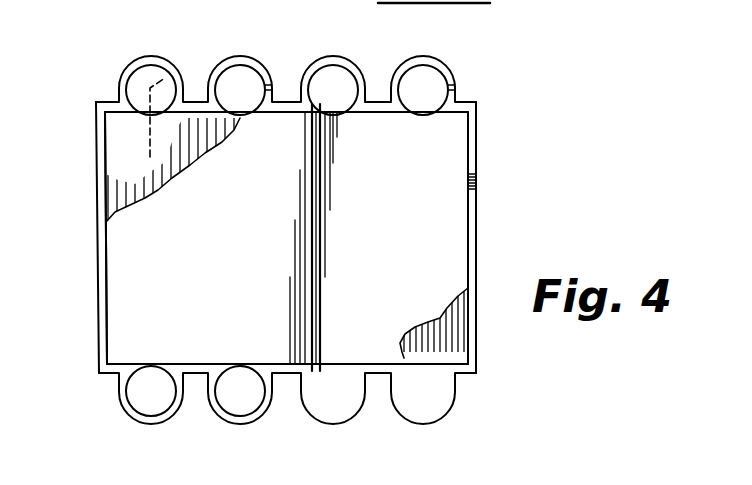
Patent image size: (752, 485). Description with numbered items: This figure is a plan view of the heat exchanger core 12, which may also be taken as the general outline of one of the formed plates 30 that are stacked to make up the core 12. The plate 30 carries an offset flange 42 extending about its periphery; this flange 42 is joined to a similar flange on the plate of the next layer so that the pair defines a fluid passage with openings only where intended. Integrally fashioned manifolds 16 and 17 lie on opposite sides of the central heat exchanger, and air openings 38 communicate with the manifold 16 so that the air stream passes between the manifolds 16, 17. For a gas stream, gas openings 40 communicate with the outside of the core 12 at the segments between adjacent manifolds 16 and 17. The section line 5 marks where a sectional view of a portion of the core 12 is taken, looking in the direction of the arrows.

The core 12 is at (650, 108).
The formed plate 30 is at (511, 188).
The offset flange 42 is at (96, 282).
The air openings 38 is at (147, 107).
The manifold 16 is at (340, 100).
The manifold 17 is at (152, 378).
The gas openings 40 is at (198, 155).
The section line 5- 5 is at (192, 62).